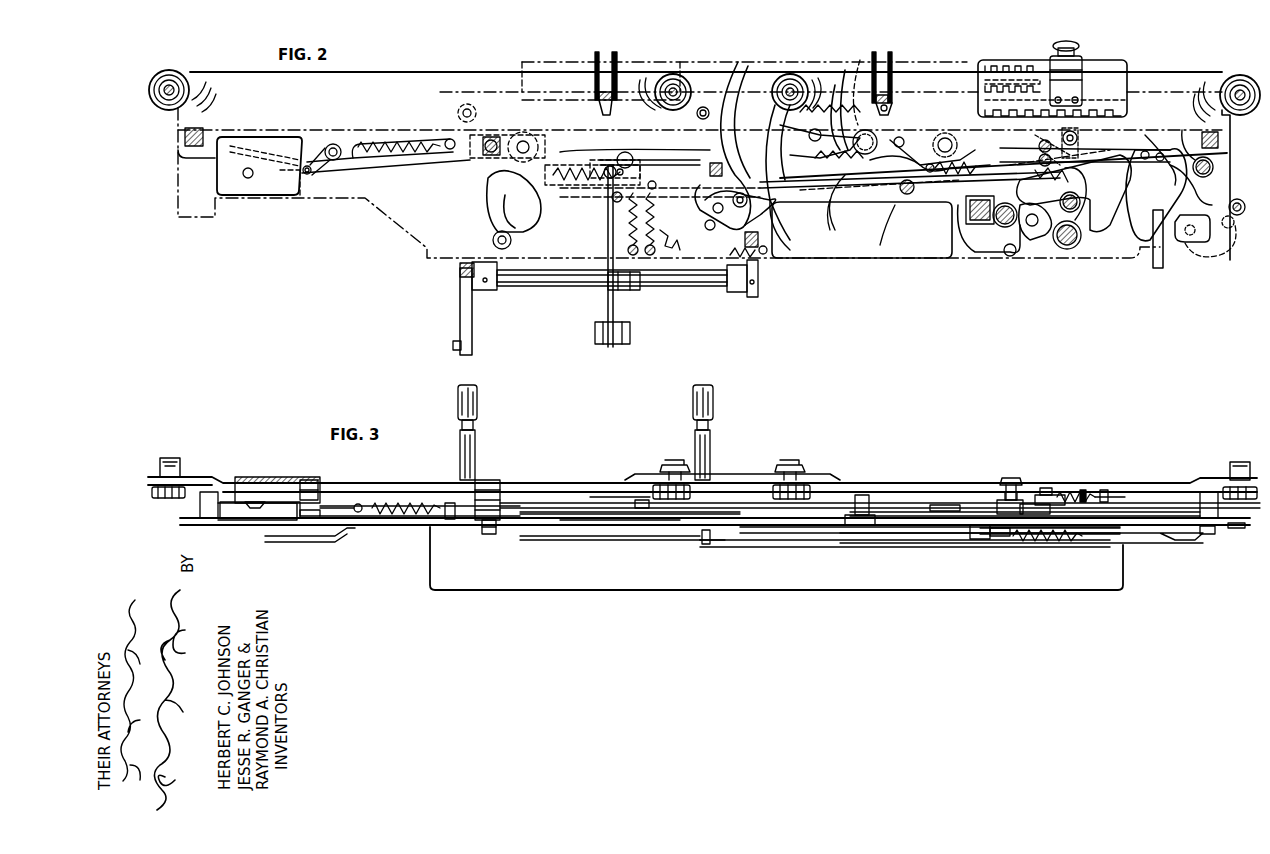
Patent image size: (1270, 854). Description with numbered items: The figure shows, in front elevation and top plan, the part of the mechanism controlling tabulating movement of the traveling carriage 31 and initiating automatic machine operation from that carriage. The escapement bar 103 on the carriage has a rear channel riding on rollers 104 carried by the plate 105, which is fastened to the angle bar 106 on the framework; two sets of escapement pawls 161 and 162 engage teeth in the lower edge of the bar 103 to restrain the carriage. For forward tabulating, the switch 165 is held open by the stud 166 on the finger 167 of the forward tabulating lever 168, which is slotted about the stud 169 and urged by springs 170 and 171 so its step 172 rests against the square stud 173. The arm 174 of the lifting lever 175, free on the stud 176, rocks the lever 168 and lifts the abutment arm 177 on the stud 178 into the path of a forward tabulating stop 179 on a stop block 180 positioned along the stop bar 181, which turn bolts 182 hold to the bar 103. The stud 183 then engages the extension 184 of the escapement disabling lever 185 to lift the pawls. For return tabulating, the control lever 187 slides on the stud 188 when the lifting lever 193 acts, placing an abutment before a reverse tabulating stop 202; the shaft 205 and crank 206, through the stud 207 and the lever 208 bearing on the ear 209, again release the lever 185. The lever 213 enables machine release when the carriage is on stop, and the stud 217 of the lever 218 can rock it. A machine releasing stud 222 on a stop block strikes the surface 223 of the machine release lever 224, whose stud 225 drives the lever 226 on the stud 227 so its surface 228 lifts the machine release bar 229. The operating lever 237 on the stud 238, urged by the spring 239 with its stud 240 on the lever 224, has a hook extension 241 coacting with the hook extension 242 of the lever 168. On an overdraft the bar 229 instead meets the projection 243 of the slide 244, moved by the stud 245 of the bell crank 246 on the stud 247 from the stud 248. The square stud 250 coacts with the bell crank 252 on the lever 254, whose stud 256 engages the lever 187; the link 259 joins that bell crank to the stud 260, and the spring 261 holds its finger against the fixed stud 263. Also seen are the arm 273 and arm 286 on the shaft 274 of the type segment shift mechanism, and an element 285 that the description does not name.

In FIG. 2, the traveling carriage 31 is at (648, 55).
In FIG. 2, the escapement bar 103 is at (835, 72).
In FIG. 2, the rollers 104 is at (168, 70).
In FIG. 3, the rollers 104 is at (158, 497).
In FIG. 2, the plate 105 is at (234, 72).
In FIG. 3, the plate 105 is at (440, 482).
In FIG. 2, the angle bar 106 is at (371, 202).
In FIG. 3, the angle bar 106 is at (210, 523).
In FIG. 2, the escapement pawls 161 is at (770, 97).
In FIG. 3, the escapement pawls 161 is at (755, 490).
In FIG. 2, the escapement pawls 162 is at (842, 80).
In FIG. 3, the escapement pawls 162 is at (845, 488).
In FIG. 2, the second switch 165 is at (265, 136).
In FIG. 3, the second switch 165 is at (245, 477).
In FIG. 2, the stud 166 is at (307, 171).
In FIG. 3, the stud 166 is at (302, 474).
In FIG. 2, the finger 167 is at (328, 143).
In FIG. 3, the finger 167 is at (315, 518).
In FIG. 2, the forward tabulating lever 168 is at (430, 163).
In FIG. 3, the forward tabulating lever 168 is at (420, 518).
In FIG. 2, the stud 169 is at (463, 112).
In FIG. 3, the stud 169 is at (490, 530).
In FIG. 2, the spring 170 is at (415, 140).
In FIG. 3, the spring 170 is at (375, 502).
In FIG. 2, the spring 171 is at (609, 237).
In FIG. 2, the step 172 is at (695, 132).
In FIG. 2, the square stud 173 is at (742, 110).
In FIG. 2, the arm 174 is at (678, 235).
In FIG. 2, the lifting lever 175 is at (826, 204).
In FIG. 2, the stud 176 is at (887, 208).
In FIG. 2, the abutment arm 177 is at (775, 204).
In FIG. 3, the abutment arm 177 is at (548, 498).
In FIG. 2, the stud 178 is at (530, 128).
In FIG. 2, the forward tabulating stops 179 is at (893, 100).
In FIG. 2, the carriage stop blocks 180 is at (593, 52).
In FIG. 2, the stop bar 181 is at (520, 86).
In FIG. 2, the turn bolts 182 is at (1057, 50).
In FIG. 2, the stud 183 is at (494, 240).
In FIG. 2, the downward extension 184 is at (490, 200).
In FIG. 2, the escapement disabling lever 185 is at (586, 181).
In FIG. 3, the escapement disabling lever 185 is at (528, 466).
In FIG. 3, the tabulating control lever 187 is at (762, 541).
In FIG. 2, the stud 188 is at (945, 138).
In FIG. 3, the lifting lever 193 is at (1142, 542).
In FIG. 2, the reverse tabulating stops 202 is at (596, 108).
In FIG. 2, the shaft 205 is at (1107, 246).
In FIG. 2, the crank 206 is at (1070, 244).
In FIG. 2, the stud 207 is at (1033, 226).
In FIG. 2, the lever 208 is at (952, 228).
In FIG. 2, the bent-over ear 209 is at (605, 217).
In FIG. 3, the lever 213 is at (795, 545).
In FIG. 3, the stud 217 is at (700, 534).
In FIG. 3, the lever 218 is at (320, 540).
In FIG. 2, the machine releasing stud 222 is at (892, 96).
In FIG. 2, the upwardly-projecting surface 223 is at (710, 90).
In FIG. 2, the machine release lever 224 is at (990, 91).
In FIG. 3, the machine release lever 224 is at (918, 500).
In FIG. 2, the stud 225 is at (1070, 135).
In FIG. 2, the lever 226 is at (1070, 201).
In FIG. 3, the lever 226 is at (1113, 518).
In FIG. 2, the stud 227 is at (1055, 226).
In FIG. 2, the flat surface 228 is at (1157, 195).
In FIG. 2, the machine release bar 229 is at (1163, 256).
In FIG. 2, the operating lever 237 is at (882, 180).
In FIG. 2, the stud 238 is at (898, 139).
In FIG. 2, the spring 239 is at (995, 102).
In FIG. 2, the stud 240 is at (855, 60).
In FIG. 2, the hook-shaped left-hand extension 241 is at (793, 200).
In FIG. 2, the hook-shaped right-hand extension 242 is at (773, 220).
In FIG. 2, the upward projection 243 is at (1183, 228).
In FIG. 2, the operating slide 244 is at (1200, 245).
In FIG. 2, the stud 245 is at (1224, 204).
In FIG. 2, the bell crank 246 is at (1214, 168).
In FIG. 2, the stud 247 is at (1182, 132).
In FIG. 2, the stud 248 is at (1178, 132).
In FIG. 2, the square stud 250 is at (1108, 143).
In FIG. 2, the bell crank 252 is at (1072, 207).
In FIG. 3, the bell crank 252 is at (1073, 492).
In FIG. 2, the lever 254 is at (1005, 248).
In FIG. 3, the lever 254 is at (983, 495).
In FIG. 2, the stud 256 is at (1010, 253).
In FIG. 2, the link 259 is at (960, 206).
In FIG. 3, the link 259 is at (1043, 490).
In FIG. 2, the stud 260 is at (1046, 90).
In FIG. 2, the spring 261 is at (1080, 98).
In FIG. 3, the spring 261 is at (1108, 488).
In FIG. 3, the fixed stud 263 is at (1035, 461).
In FIG. 2, the arm 273 is at (480, 297).
In FIG. 2, the shaft 274 is at (543, 284).
In FIG. 2, the knob 285 is at (454, 343).
In FIG. 2, the arm 286 is at (476, 338).